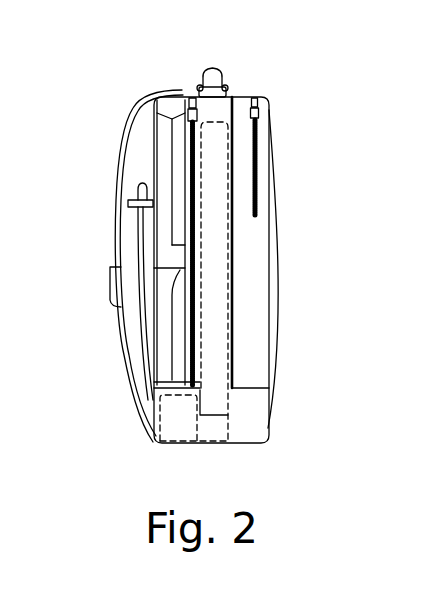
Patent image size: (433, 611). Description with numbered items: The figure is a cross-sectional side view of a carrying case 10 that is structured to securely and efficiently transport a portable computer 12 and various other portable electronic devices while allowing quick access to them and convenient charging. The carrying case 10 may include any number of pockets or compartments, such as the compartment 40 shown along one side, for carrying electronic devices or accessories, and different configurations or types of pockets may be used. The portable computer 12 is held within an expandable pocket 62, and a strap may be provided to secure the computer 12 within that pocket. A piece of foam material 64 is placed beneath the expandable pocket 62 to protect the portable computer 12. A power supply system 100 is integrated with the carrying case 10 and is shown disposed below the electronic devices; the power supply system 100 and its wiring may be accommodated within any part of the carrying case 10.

The carrying case 10 is at (250, 68).
The portable computer 12 is at (215, 252).
The compartment 40 is at (132, 220).
The expandable pocket 62 is at (210, 113).
The foam material 64 is at (208, 430).
The power supply system 100 is at (176, 414).